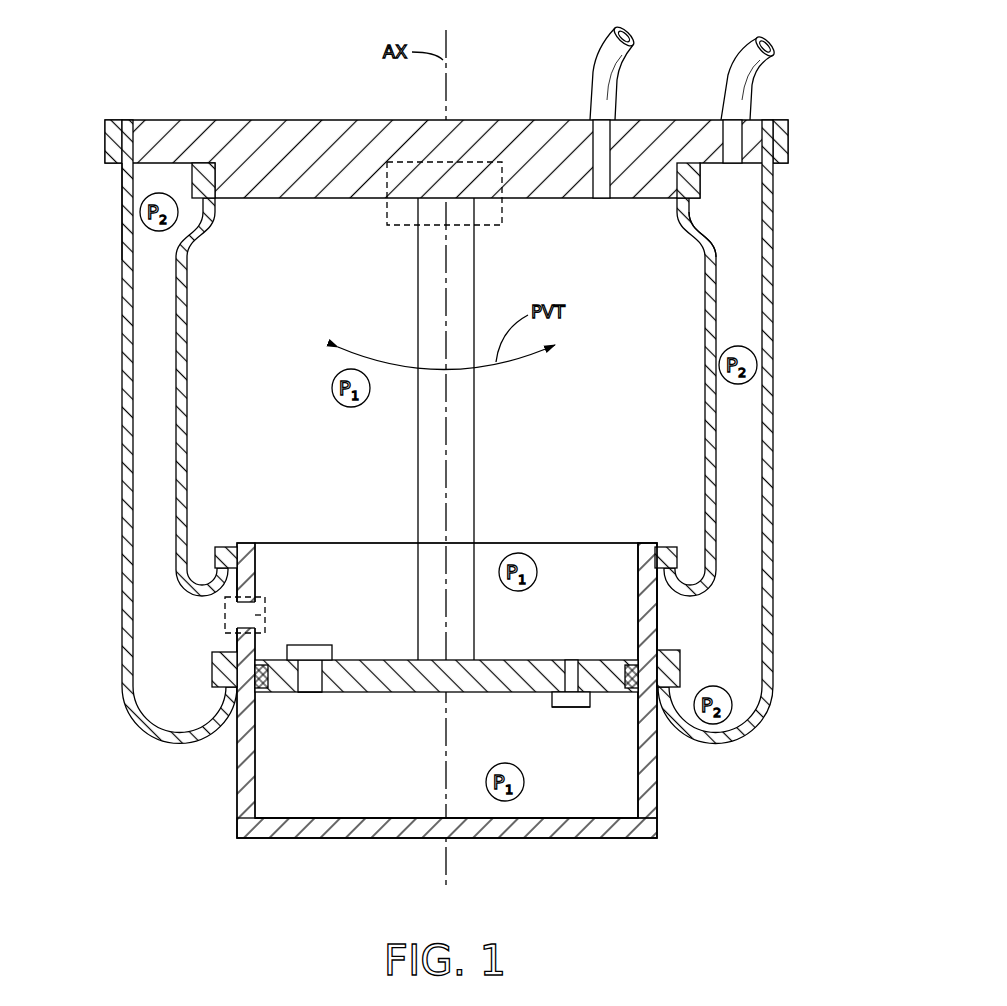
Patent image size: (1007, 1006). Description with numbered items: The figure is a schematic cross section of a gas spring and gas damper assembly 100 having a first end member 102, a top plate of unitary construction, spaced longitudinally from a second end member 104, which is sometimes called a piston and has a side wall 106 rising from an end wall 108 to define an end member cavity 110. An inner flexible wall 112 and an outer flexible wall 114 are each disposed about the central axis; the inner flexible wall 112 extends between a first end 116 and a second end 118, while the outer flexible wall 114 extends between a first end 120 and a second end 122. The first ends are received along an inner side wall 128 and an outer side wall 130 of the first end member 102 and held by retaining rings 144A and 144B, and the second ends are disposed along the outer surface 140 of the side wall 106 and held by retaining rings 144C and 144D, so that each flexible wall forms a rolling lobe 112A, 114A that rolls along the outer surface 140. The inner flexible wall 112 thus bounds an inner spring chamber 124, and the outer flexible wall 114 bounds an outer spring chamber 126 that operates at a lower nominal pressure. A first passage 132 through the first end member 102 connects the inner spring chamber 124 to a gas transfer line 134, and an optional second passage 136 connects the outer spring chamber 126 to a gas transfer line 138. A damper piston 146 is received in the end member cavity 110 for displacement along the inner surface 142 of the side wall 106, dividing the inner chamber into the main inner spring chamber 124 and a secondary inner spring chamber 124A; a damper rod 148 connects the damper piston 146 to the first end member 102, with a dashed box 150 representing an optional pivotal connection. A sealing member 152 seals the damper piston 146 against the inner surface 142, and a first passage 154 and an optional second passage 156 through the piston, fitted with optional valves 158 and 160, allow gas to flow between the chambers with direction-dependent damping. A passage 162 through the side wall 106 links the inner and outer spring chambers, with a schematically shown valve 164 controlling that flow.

The gas spring and gas damper assembly 100 is at (222, 50).
The first end member 102 is at (295, 117).
The second end member 104 is at (345, 840).
The side wall 106 is at (655, 775).
The end wall 108 is at (573, 838).
The end member cavity 110 is at (283, 770).
The inner flexible wall 112 is at (705, 340).
The rolling lobe of inner flexible wall 112A is at (180, 590).
The outer flexible wall 114 is at (775, 410).
The rolling lobe of outer flexible wall 114A is at (145, 735).
The first end of inner flexible wall 116 is at (678, 228).
The second end of inner flexible wall 118 is at (665, 535).
The first end of outer flexible wall 120 is at (112, 180).
The second end of outer flexible wall 122 is at (218, 645).
The inner spring chamber 124 is at (558, 416).
The secondary inner spring chamber 124A is at (322, 786).
The outer spring chamber 126 is at (138, 407).
The inner side wall 128 is at (213, 177).
The outer side wall 130 is at (138, 140).
The first passage 132 is at (593, 165).
The gas transfer line 134 is at (607, 35).
The second passage 136 is at (722, 145).
The gas transfer line 138 is at (748, 47).
The outer surface 140 is at (655, 627).
The inner surface 142 is at (638, 598).
The retaining ring 144A is at (700, 184).
The retaining ring 144B is at (790, 150).
The retaining ring 144C is at (222, 546).
The retaining ring 144D is at (212, 672).
The damper piston 146 is at (495, 683).
The damper rod 148 is at (476, 272).
The dashed box 150 is at (387, 215).
The sealing member 152 is at (624, 675).
The first passage 154 is at (560, 675).
The second passage 156 is at (335, 693).
The valve 158 is at (575, 708).
The valve 160 is at (313, 645).
The passage 162 is at (245, 602).
The valve 164 is at (265, 615).